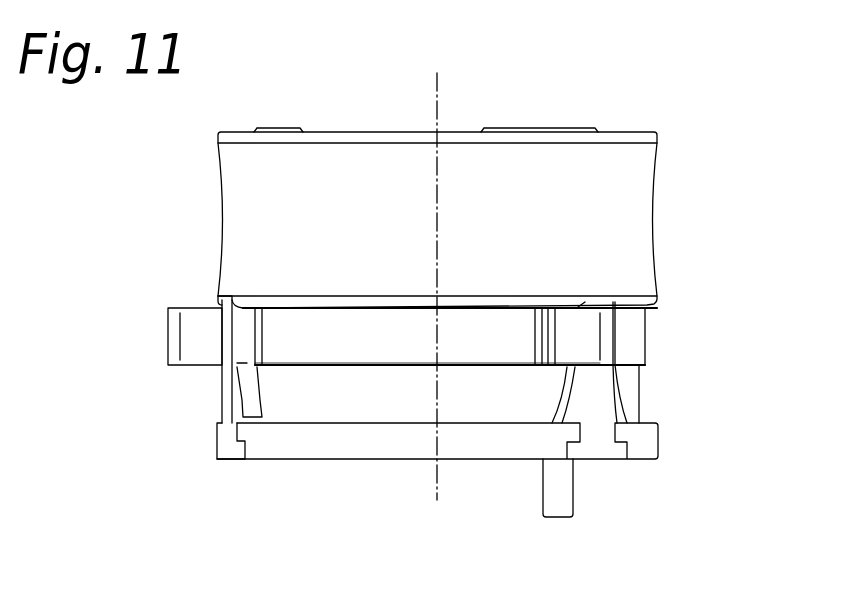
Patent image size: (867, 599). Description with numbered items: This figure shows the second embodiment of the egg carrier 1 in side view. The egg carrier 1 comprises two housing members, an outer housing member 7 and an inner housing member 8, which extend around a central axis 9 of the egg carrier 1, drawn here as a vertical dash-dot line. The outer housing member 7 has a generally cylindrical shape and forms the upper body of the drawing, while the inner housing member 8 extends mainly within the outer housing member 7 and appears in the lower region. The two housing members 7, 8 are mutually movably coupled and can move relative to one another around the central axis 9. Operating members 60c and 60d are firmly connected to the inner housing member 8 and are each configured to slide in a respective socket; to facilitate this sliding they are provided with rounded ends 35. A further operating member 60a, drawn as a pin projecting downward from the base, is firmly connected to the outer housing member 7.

The egg carrier 1 is at (556, 84).
The outer housing member 7 is at (656, 126).
The inner housing member 8 is at (637, 338).
The central axis 9 is at (437, 88).
The rounded ends 35 is at (177, 347).
The operating member 60a is at (534, 508).
The operating member 60c is at (586, 356).
The operating member 60d is at (190, 302).